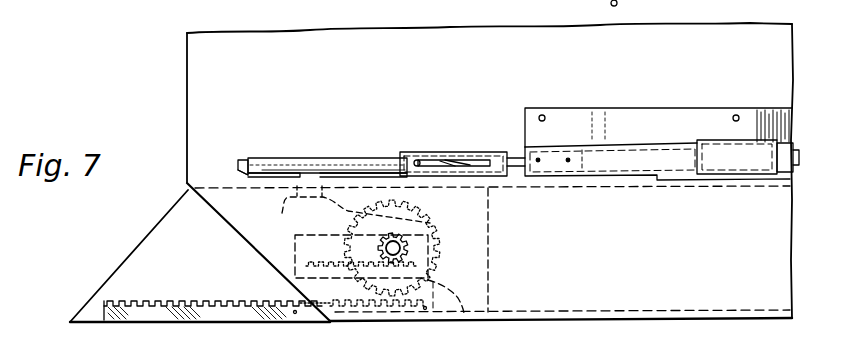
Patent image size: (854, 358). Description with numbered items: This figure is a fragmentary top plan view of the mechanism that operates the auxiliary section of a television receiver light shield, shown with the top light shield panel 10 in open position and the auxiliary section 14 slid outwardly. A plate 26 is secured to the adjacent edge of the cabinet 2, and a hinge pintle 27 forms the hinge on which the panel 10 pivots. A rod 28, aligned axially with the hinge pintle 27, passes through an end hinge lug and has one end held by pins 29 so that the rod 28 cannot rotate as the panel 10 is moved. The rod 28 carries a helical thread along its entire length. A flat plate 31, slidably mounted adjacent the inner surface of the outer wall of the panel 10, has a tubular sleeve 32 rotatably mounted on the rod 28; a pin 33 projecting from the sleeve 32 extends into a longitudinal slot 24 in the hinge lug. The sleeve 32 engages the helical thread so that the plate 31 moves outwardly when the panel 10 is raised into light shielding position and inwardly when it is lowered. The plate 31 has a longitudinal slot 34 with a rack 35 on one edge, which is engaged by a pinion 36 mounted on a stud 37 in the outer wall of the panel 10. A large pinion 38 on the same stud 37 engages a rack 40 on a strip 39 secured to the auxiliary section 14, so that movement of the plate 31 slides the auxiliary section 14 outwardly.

The television receiver cabinet 2 is at (539, 49).
The top light shield panel 10 is at (660, 318).
The auxiliary section 14 is at (156, 250).
The longitudinal slot 24 is at (477, 158).
The plate 26 is at (642, 110).
The hinge pintle 27 is at (657, 184).
The rod 28 is at (243, 159).
The pins 29 is at (538, 161).
The flat plate 31 is at (283, 213).
The tubular sleeve 32 is at (342, 158).
The pin 33 is at (415, 158).
The longitudinal slot 34 is at (270, 258).
The rack 35 is at (286, 276).
The pinion 36 is at (460, 239).
The stud 37 is at (393, 253).
The large pinion 38 is at (465, 315).
The strip 39 is at (150, 319).
The rack 40 is at (147, 306).